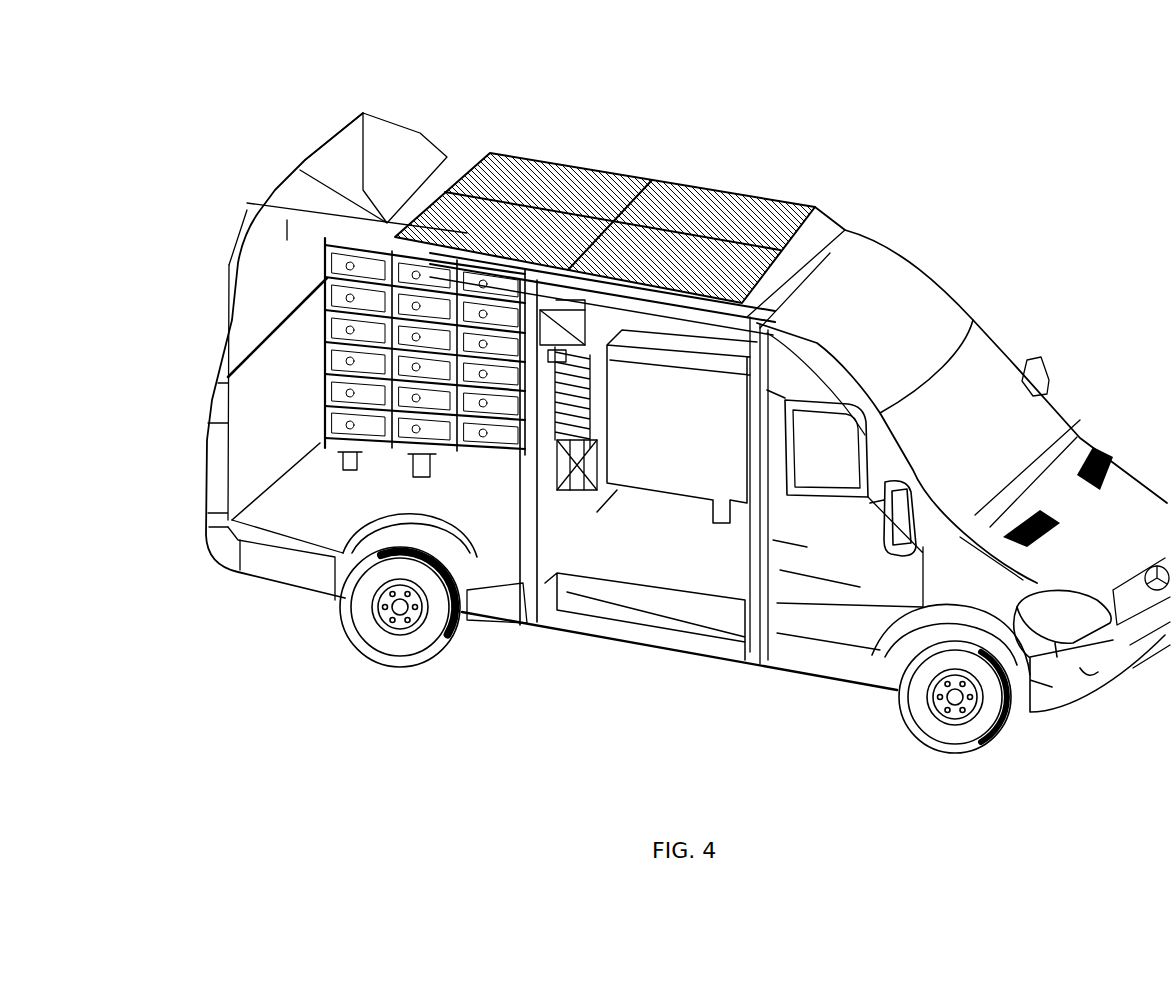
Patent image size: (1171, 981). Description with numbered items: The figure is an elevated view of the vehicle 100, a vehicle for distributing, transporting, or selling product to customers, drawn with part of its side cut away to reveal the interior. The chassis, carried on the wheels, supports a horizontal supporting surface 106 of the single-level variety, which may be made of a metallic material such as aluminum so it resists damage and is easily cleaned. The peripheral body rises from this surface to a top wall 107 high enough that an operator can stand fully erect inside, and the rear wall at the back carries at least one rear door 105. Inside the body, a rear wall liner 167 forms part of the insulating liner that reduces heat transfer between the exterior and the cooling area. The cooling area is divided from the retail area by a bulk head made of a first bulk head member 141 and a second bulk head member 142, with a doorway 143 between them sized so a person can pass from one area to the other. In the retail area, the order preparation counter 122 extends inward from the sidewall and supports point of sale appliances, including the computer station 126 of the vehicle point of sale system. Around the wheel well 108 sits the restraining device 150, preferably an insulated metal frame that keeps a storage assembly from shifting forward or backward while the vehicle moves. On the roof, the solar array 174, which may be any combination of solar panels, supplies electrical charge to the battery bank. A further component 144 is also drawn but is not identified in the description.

The vehicle 100 is at (997, 235).
The rear door 105 is at (265, 335).
The horizontal supporting surface 106 is at (662, 530).
The top wall 107 is at (818, 243).
The wheel well 108 is at (483, 453).
The order preparation counter 122 is at (682, 353).
The computer station 126 is at (553, 330).
The first bulk head member 141 is at (610, 303).
The second bulk head member 142 is at (536, 410).
The doorway 143 is at (575, 296).
The partition column 144 is at (560, 507).
The restraining device 150 is at (417, 447).
The rear wall liner 167 is at (278, 362).
The solar array 174 is at (752, 223).